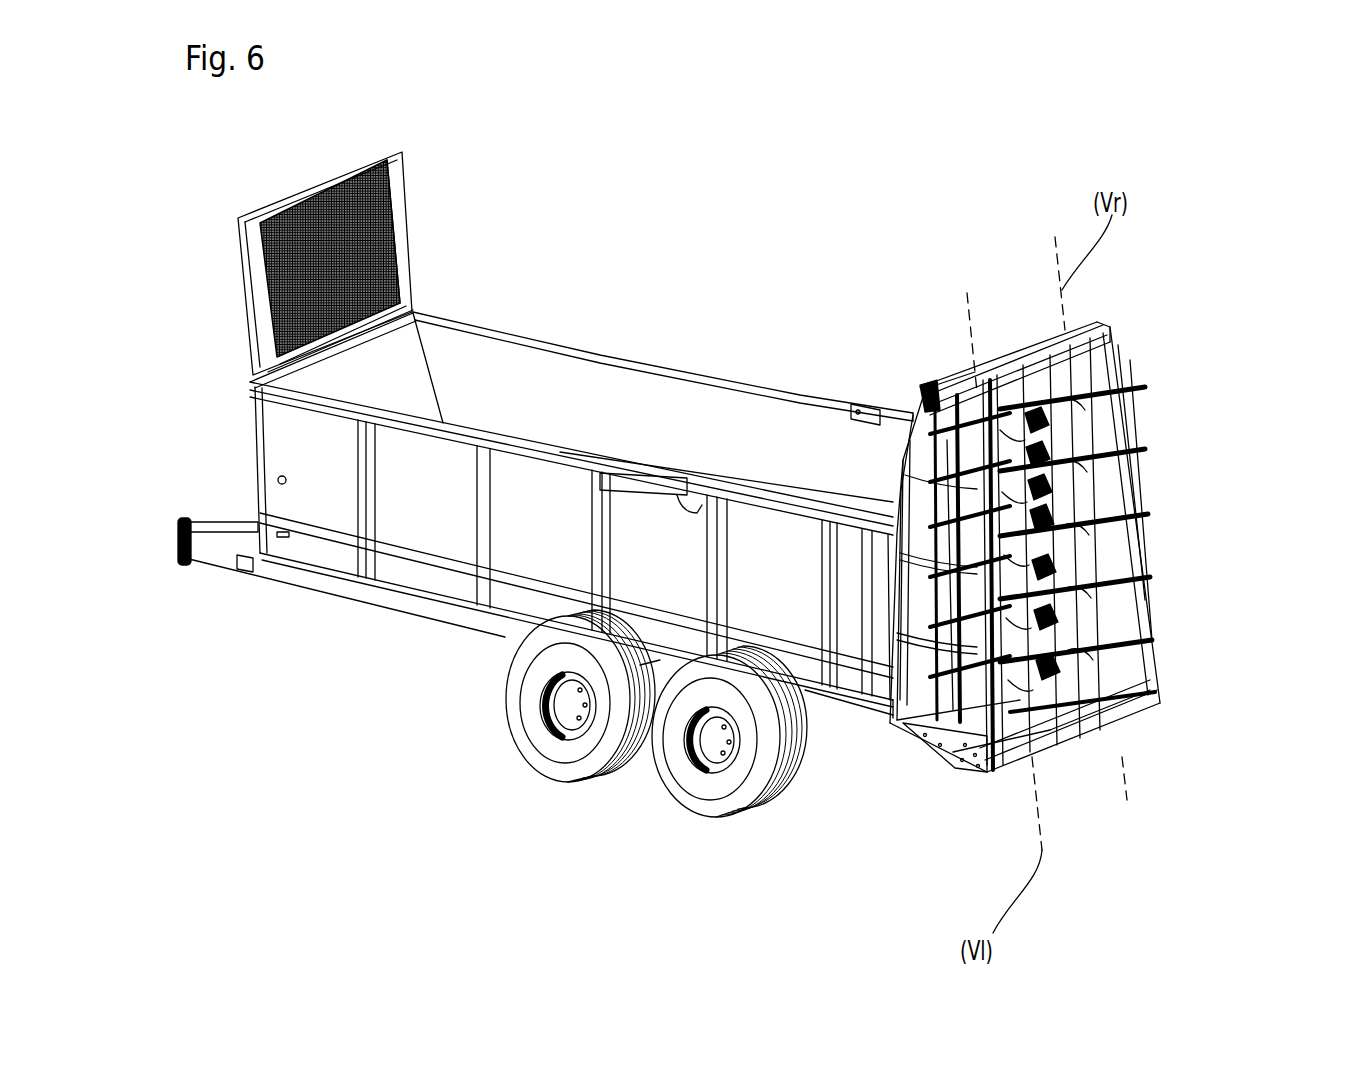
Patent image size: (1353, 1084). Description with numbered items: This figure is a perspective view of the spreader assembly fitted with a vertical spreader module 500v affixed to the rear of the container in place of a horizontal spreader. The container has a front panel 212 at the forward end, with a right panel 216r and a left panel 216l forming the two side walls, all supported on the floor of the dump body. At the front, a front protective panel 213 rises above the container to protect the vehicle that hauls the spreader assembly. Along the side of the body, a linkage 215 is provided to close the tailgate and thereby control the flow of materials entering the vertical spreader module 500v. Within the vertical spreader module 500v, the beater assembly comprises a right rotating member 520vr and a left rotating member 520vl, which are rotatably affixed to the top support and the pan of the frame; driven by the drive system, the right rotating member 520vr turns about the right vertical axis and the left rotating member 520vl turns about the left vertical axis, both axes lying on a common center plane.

The front protective panel 213 is at (247, 287).
The front panel 212 is at (403, 396).
The right panel 216r is at (694, 437).
The left panel 216l is at (558, 534).
The linkage 215 is at (867, 404).
The vertical spreader module 500v is at (1122, 307).
The left rotating member 520vl is at (1015, 740).
The right rotating member 520vr is at (1120, 705).